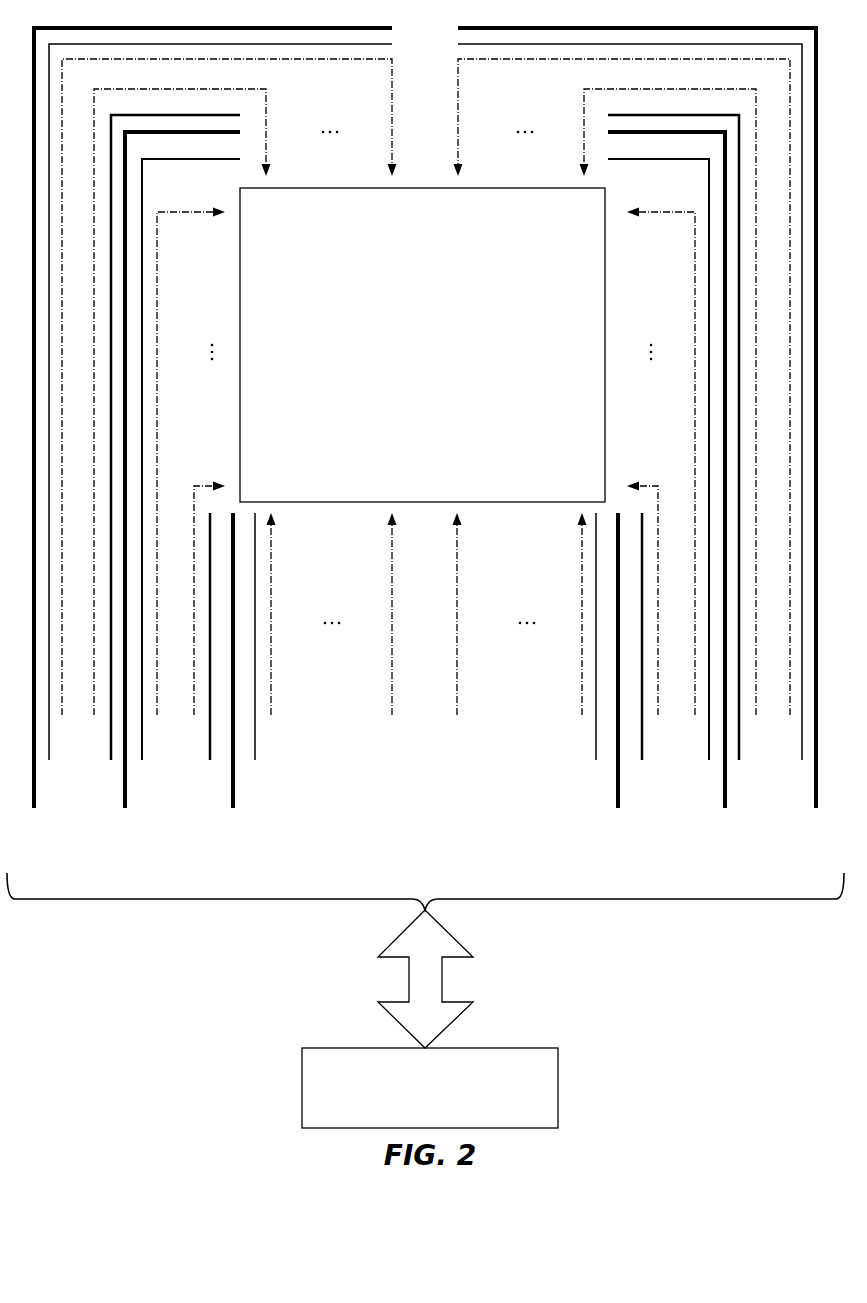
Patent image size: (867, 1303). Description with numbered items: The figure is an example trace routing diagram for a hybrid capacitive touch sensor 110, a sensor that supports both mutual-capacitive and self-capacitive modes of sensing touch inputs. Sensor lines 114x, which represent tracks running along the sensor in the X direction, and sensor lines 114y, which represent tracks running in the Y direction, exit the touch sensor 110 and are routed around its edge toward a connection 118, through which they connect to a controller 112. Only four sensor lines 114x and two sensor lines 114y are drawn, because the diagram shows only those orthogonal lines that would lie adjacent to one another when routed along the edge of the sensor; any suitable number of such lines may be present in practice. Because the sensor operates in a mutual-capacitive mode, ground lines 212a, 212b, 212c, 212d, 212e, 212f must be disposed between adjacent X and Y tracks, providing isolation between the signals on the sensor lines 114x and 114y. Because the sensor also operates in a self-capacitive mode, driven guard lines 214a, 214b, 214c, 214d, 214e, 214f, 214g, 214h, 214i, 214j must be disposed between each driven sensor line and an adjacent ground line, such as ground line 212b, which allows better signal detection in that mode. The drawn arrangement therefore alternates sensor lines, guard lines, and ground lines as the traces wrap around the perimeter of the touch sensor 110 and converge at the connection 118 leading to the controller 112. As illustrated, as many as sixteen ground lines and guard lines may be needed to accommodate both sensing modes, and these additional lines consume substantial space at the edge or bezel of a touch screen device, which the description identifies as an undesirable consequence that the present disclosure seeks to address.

The hybrid capacitive touch sensor 110 is at (422, 345).
The controller 112 is at (296, 1083).
The connection 118 is at (386, 947).
The sensor lines 114x is at (426, 405).
The sensor lines 114y is at (426, 480).
The ground line 212a is at (210, 439).
The ground line 212b is at (179, 492).
The ground line 212c is at (233, 682).
The ground line 212d is at (618, 682).
The ground line 212e is at (670, 491).
The ground line 212f is at (641, 439).
The guard line 214a is at (217, 421).
The guard line 214b is at (172, 457).
The guard line 214c is at (188, 479).
The guard line 214d is at (210, 656).
The guard line 214e is at (255, 656).
The guard line 214f is at (596, 655).
The guard line 214g is at (642, 656).
The guard line 214h is at (662, 479).
The guard line 214i is at (677, 456).
The guard line 214j is at (634, 420).